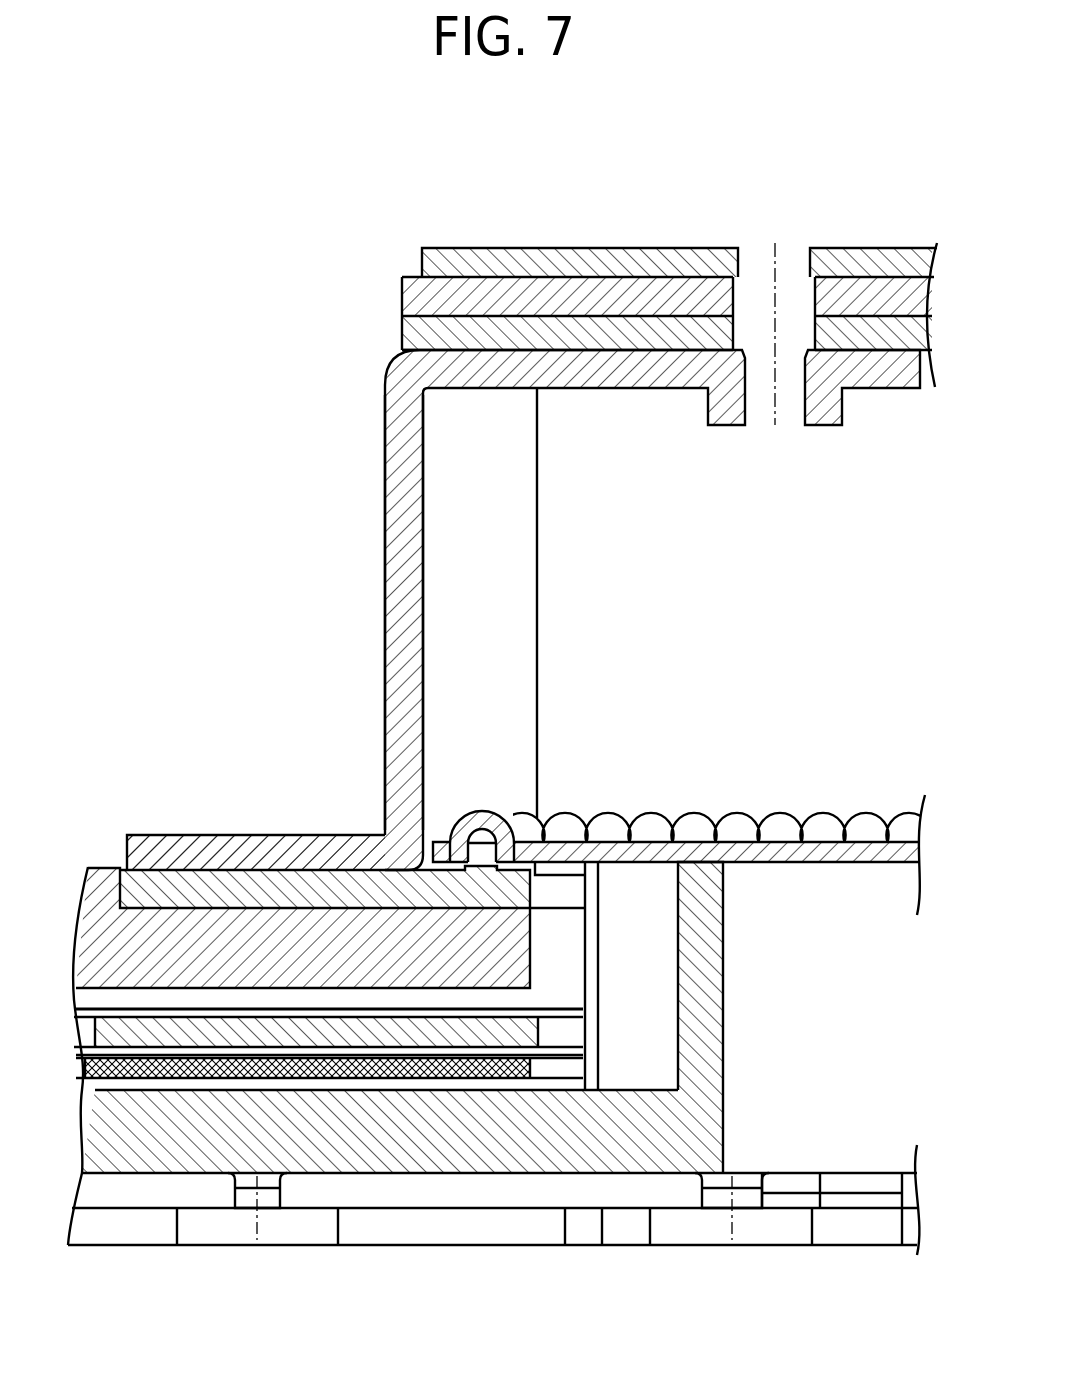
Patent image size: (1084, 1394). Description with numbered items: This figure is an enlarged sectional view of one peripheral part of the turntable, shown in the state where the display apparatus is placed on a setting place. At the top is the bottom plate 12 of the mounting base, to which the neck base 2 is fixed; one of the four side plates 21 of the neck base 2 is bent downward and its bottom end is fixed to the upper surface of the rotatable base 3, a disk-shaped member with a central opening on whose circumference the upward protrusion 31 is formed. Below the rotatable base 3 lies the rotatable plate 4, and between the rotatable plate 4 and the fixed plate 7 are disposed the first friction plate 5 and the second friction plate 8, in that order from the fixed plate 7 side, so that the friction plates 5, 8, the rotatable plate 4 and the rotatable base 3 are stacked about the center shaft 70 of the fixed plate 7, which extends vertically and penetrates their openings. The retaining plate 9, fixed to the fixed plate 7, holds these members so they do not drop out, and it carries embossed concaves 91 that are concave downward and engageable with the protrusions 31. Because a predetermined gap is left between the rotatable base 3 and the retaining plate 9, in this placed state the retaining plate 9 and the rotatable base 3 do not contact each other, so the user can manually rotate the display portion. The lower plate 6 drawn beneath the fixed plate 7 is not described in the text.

The bottom plate 12 is at (675, 295).
The neck base 2 is at (376, 463).
The side plate 21 is at (405, 592).
The protrusion 31 is at (347, 848).
The rotatable base 3 is at (225, 895).
The rotatable plate 4 is at (188, 942).
The retaining plate 9 is at (825, 838).
The concave 91 is at (490, 812).
The center shaft 70 is at (718, 932).
The second friction plate 8 is at (530, 1035).
The first friction plate 5 is at (440, 1062).
The fixed plate 7 is at (325, 1140).
The base board 6 is at (620, 1247).